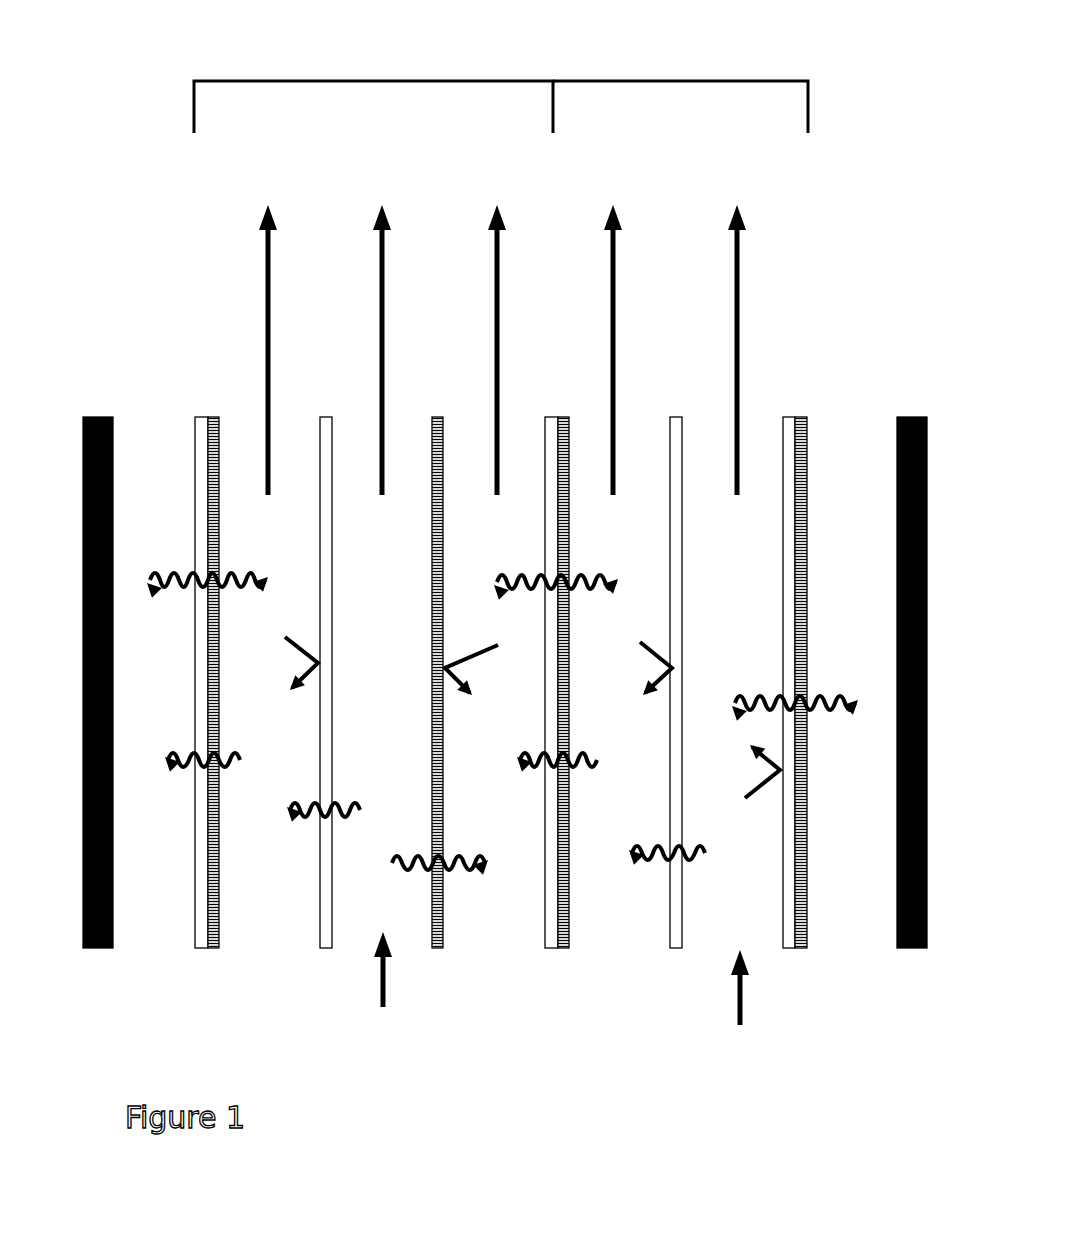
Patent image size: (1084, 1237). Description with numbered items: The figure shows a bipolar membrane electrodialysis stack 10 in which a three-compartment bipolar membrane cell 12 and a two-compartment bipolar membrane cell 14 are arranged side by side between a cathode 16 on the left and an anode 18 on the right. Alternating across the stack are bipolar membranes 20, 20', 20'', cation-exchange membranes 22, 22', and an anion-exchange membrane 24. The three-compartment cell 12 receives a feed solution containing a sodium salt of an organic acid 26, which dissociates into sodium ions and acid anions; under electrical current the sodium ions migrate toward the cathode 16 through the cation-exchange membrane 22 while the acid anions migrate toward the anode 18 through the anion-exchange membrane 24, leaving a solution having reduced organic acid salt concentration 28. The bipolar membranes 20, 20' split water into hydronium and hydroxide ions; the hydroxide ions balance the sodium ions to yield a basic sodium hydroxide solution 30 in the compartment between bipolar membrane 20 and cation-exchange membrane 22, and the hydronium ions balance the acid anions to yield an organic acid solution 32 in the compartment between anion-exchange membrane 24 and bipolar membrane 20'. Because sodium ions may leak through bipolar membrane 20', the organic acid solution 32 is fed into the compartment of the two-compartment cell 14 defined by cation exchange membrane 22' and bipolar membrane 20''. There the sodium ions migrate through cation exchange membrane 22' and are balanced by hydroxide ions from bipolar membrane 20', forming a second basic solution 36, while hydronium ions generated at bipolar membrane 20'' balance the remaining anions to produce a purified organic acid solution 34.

The bipolar membrane electrodialysis stack 10 is at (182, 118).
The three-compartment bipolar membrane cell 12 is at (373, 66).
The two-compartment bipolar membrane cell 14 is at (680, 66).
The cathode 16 is at (116, 927).
The anode 18 is at (895, 916).
The bipolar membrane 20 is at (207, 620).
The bipolar membrane 20' is at (557, 620).
The bipolar membrane 20'' is at (795, 620).
The cation-exchange membrane 22 is at (325, 607).
The cation exchange membrane 22' is at (675, 607).
The anion-exchange membrane 24 is at (428, 447).
The feed solution containing a sodium salt of an organic acid 26 is at (382, 1031).
The solution having reduced organic acid salt concentration 28 is at (381, 309).
The basic sodium hydroxide solution 30 is at (269, 309).
The organic acid solution 32 is at (628, 609).
The purified organic acid solution 34 is at (694, 448).
The second basic solution 36 is at (612, 309).